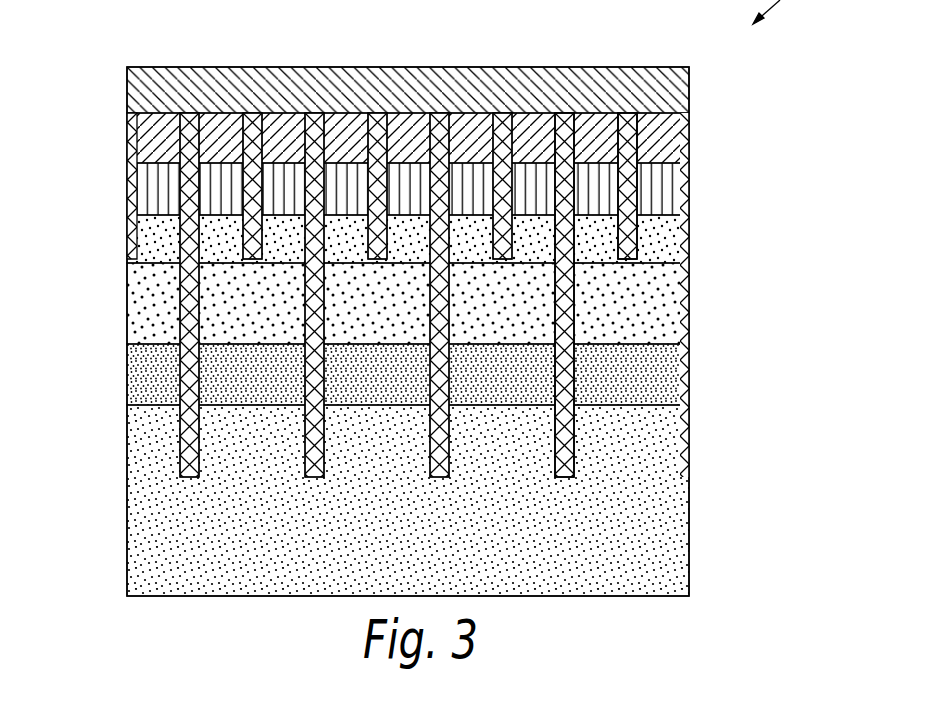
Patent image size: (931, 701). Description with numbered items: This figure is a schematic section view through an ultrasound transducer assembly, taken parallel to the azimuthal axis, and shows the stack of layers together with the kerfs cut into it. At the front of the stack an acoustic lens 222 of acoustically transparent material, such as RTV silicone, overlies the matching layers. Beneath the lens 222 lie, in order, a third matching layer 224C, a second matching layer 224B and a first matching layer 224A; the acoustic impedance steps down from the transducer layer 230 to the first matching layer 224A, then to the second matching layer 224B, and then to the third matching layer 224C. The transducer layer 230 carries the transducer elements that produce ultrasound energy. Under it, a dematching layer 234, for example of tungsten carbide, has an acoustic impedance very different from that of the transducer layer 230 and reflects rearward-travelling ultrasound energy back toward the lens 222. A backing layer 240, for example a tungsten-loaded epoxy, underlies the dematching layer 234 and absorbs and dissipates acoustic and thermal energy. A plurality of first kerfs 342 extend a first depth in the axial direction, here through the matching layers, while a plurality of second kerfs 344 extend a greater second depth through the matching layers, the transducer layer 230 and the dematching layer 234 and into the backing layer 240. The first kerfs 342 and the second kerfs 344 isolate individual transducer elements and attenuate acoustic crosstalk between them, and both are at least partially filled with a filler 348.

The acoustic lens 222 is at (142, 98).
The third matching layer 224C is at (146, 135).
The second matching layer 224B is at (147, 188).
The first matching layer 224A is at (145, 240).
The transducer layer 230 is at (148, 310).
The dematching layer 234 is at (148, 388).
The backing layer 240 is at (148, 470).
The filler 348 is at (628, 160).
The first kerfs 342 is at (637, 242).
The second kerfs 344 is at (577, 383).